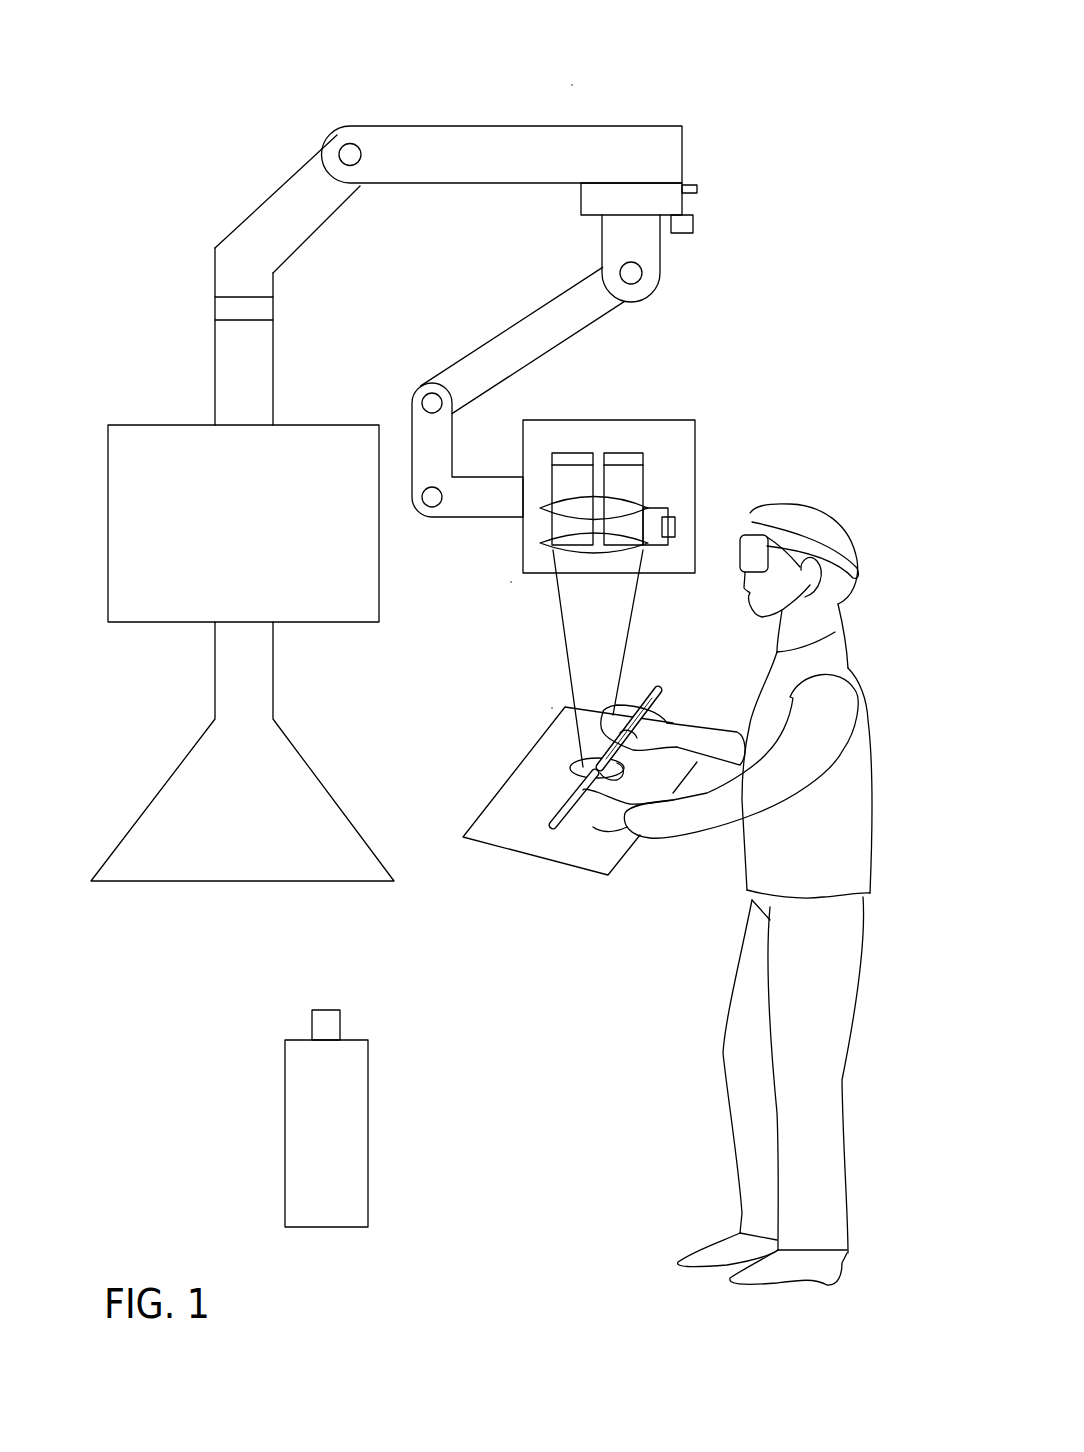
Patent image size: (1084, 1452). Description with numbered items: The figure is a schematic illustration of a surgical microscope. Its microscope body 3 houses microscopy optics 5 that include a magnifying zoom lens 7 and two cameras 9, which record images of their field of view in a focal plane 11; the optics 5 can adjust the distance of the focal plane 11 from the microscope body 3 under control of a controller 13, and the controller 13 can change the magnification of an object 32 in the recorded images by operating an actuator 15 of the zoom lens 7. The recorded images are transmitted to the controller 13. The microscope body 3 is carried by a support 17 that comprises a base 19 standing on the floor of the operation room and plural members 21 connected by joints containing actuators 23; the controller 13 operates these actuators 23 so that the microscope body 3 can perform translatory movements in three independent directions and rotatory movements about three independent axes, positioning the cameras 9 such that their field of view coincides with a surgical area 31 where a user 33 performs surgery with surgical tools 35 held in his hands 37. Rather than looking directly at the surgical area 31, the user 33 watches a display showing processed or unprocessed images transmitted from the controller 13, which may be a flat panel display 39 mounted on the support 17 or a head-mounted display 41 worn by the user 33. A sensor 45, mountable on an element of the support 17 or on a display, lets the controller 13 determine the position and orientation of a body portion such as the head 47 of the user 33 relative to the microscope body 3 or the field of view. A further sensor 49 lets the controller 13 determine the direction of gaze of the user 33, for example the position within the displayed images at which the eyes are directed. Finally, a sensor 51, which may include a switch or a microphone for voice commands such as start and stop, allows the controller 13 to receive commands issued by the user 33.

The microscope body 3 is at (668, 420).
The microscopy optics 5 is at (504, 588).
The magnifying zoom lens 7 is at (675, 493).
The cameras 9 is at (620, 452).
The focal plane 11 is at (505, 847).
The controller 13 is at (368, 1108).
The actuator 15 is at (675, 530).
The support 17 is at (580, 78).
The base 19 is at (153, 795).
The members 21 is at (417, 126).
The actuators 23 is at (350, 143).
The surgical area 31 is at (545, 700).
The object 32 is at (568, 768).
The user 33 is at (822, 480).
The surgical tools 35 is at (662, 688).
The hands 37 is at (635, 678).
The flat panel display 39 is at (336, 624).
The head-mounted display 41 is at (740, 556).
The sensor 45 is at (698, 188).
The head 47 is at (853, 545).
The sensor 49 is at (693, 224).
The sensor 51 is at (340, 1025).